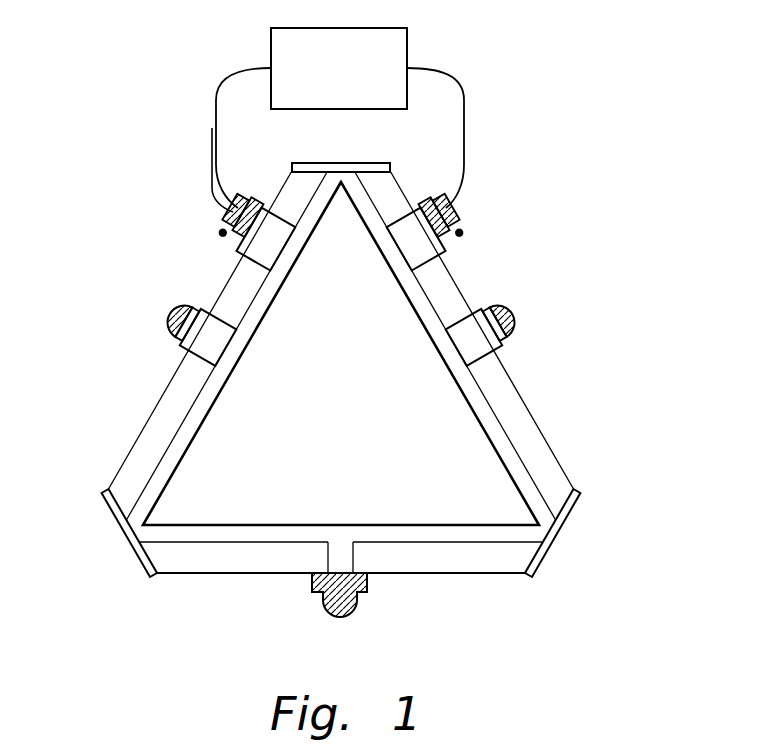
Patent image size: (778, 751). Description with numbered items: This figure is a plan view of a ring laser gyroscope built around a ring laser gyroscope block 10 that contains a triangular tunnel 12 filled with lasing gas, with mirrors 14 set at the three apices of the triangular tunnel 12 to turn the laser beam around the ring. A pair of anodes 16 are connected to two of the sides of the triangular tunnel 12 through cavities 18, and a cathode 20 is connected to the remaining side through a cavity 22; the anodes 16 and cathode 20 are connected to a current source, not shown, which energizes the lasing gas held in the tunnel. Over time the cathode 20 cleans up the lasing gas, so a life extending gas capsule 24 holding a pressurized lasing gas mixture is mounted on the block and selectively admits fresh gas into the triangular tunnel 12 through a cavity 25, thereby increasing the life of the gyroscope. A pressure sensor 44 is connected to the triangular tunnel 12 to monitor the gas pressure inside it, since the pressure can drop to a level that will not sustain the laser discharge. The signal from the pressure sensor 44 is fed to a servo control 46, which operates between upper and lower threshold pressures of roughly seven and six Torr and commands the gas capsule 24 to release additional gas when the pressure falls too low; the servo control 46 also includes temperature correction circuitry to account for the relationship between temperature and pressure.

The ring laser gyroscope block 10 is at (517, 413).
The triangular tunnel 12 is at (167, 463).
The mirrors 14 is at (349, 163).
The anodes 16 is at (166, 309).
The cavities 18 is at (212, 335).
The cathode 20 is at (343, 618).
The cavity 22 is at (342, 558).
The life extending gas capsule 24 is at (221, 233).
The cavity 25 is at (277, 237).
The pressure sensor 44 is at (458, 230).
The servo control 46 is at (407, 55).